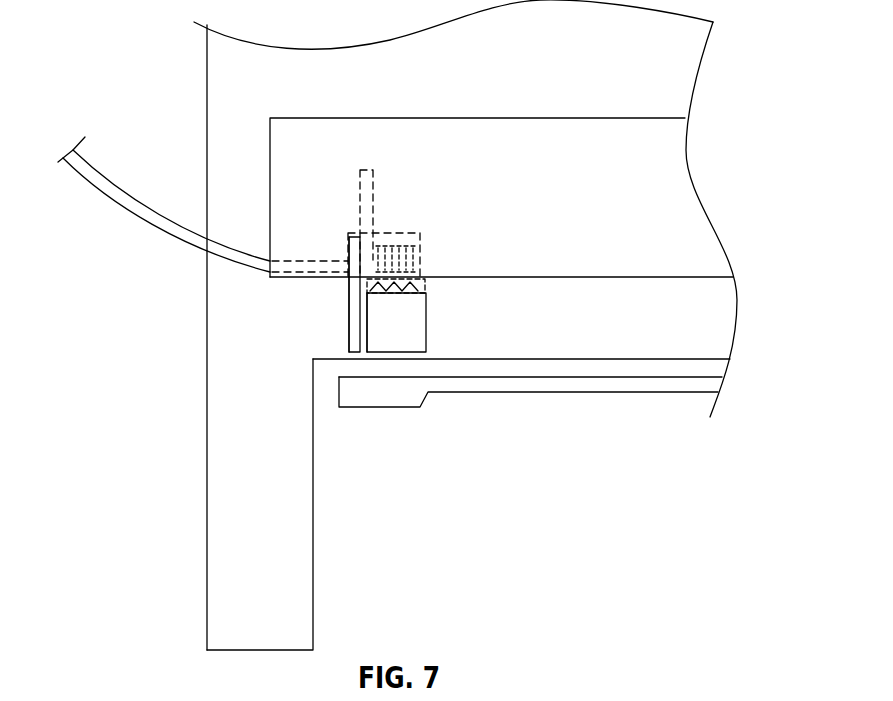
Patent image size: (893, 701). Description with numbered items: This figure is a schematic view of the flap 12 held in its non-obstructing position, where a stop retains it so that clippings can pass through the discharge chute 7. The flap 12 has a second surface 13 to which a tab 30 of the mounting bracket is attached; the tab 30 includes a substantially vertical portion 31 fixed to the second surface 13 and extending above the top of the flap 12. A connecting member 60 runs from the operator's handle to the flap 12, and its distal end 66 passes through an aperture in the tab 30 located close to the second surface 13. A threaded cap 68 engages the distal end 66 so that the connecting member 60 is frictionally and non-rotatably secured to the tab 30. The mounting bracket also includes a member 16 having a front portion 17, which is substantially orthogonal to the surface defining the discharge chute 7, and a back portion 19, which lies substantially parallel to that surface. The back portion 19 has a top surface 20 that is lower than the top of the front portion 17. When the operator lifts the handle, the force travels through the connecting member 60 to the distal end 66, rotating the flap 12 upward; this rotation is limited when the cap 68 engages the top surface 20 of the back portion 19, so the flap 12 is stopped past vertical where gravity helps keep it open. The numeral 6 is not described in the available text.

The lower housing wall 6 is at (705, 333).
The discharge chute 7 is at (518, 450).
The flap 12 is at (502, 140).
The second surface 13 is at (676, 190).
The first and second members 16 is at (347, 335).
The front portion 17 is at (347, 303).
The back portion 19 is at (425, 285).
The top surface 20 is at (388, 320).
The tab 30 is at (375, 180).
The substantially vertical portion 31 is at (367, 300).
The connecting member 60 is at (112, 205).
The distal end 66 is at (386, 255).
The threaded cap 68 is at (420, 240).